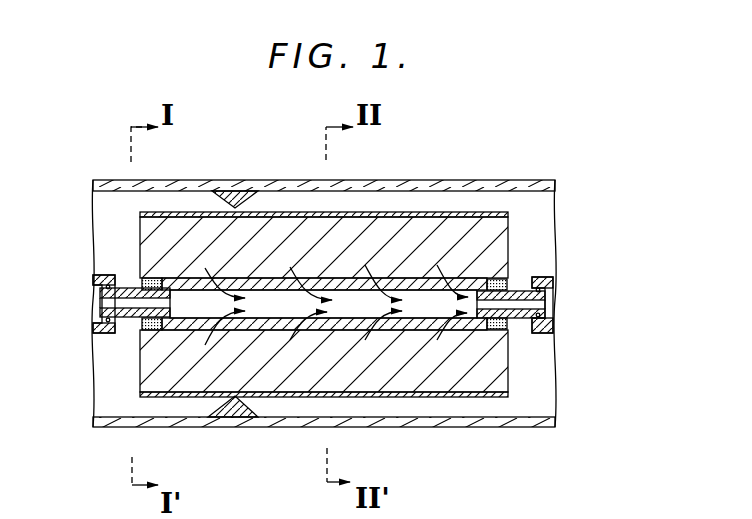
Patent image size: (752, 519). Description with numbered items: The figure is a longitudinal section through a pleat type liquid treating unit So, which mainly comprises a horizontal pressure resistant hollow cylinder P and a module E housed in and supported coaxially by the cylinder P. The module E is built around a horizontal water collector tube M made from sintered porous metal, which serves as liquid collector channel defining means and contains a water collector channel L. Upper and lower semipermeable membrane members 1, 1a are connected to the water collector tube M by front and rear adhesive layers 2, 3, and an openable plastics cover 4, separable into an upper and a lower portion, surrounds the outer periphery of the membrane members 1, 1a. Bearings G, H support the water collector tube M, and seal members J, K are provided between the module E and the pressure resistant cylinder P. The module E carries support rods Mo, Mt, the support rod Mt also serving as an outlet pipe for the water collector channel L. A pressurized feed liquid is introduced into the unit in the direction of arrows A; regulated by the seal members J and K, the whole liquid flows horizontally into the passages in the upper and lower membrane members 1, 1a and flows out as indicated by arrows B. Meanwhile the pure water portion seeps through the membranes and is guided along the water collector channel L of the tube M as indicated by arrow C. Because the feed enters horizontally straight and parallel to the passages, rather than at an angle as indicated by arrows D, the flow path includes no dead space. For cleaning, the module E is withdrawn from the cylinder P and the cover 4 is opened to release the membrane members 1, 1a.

The upper semipermeable membrane member 1 is at (470, 235).
The lower semipermeable membrane member 1a is at (513, 387).
The front adhesive layer 2 is at (143, 280).
The rear adhesive layer 3 is at (507, 278).
The openable plastics cover 4 is at (483, 211).
The arrows A is at (243, 234).
The arrows B is at (470, 237).
The arrow C is at (527, 305).
The arrows D is at (223, 254).
The module E is at (365, 228).
The bearing G is at (95, 323).
The bearing H is at (553, 332).
The seal member J is at (243, 190).
The seal member K is at (230, 419).
The water collector channel L is at (348, 310).
The water collector tube M is at (333, 328).
The support rod Mo is at (123, 317).
The support rod Mt is at (513, 320).
The horizontal pressure resistant hollow cylinder P is at (418, 185).
The liquid treating unit So is at (463, 165).